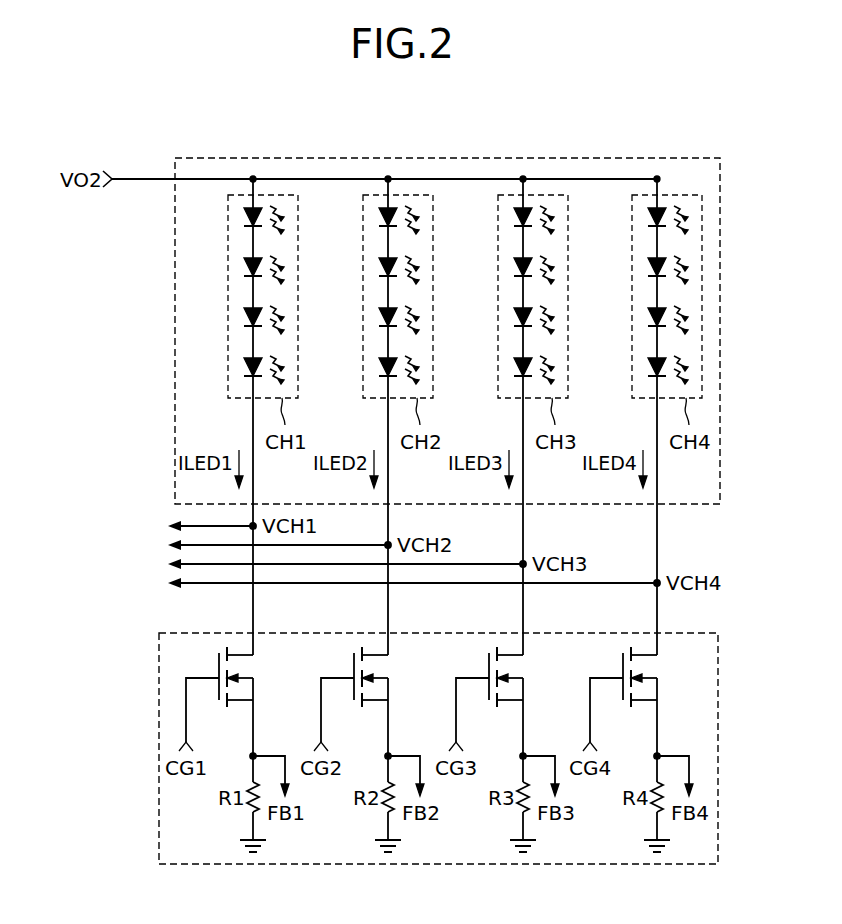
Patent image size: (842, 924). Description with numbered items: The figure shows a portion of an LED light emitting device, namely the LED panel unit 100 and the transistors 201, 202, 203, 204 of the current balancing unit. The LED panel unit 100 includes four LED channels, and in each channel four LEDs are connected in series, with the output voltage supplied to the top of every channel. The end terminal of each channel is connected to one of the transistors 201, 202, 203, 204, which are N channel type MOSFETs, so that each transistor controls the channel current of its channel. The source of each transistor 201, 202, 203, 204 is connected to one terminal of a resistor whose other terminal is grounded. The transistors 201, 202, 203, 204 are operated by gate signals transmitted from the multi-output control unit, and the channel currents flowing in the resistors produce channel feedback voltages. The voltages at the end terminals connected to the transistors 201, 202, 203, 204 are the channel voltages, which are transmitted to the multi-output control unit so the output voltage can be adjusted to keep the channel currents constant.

The LED panel unit 100 is at (483, 158).
The transistor 201 is at (219, 665).
The transistor 202 is at (354, 665).
The transistor 203 is at (489, 665).
The transistor 204 is at (623, 665).